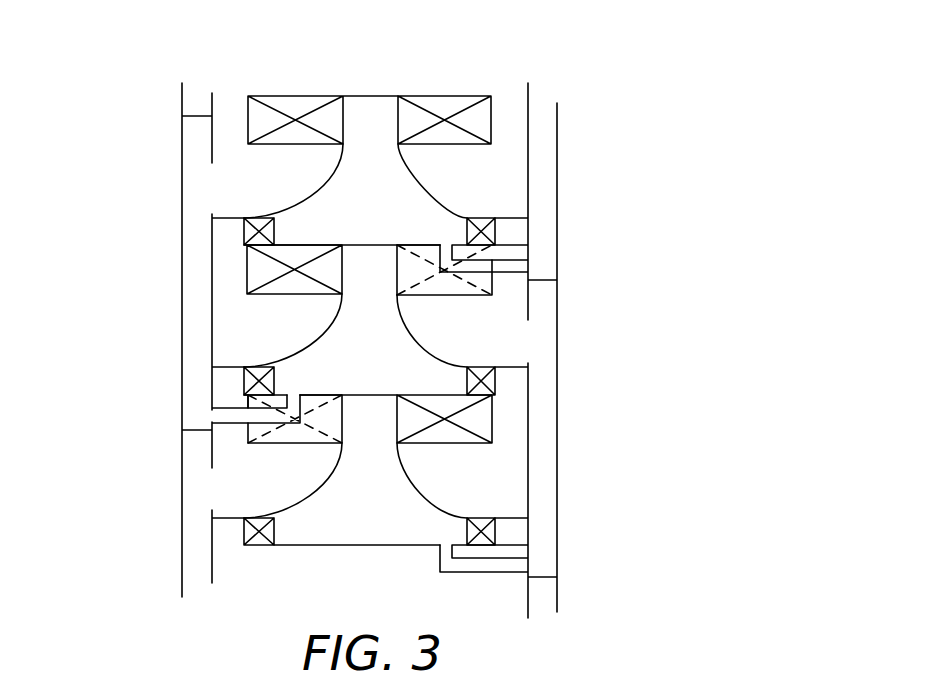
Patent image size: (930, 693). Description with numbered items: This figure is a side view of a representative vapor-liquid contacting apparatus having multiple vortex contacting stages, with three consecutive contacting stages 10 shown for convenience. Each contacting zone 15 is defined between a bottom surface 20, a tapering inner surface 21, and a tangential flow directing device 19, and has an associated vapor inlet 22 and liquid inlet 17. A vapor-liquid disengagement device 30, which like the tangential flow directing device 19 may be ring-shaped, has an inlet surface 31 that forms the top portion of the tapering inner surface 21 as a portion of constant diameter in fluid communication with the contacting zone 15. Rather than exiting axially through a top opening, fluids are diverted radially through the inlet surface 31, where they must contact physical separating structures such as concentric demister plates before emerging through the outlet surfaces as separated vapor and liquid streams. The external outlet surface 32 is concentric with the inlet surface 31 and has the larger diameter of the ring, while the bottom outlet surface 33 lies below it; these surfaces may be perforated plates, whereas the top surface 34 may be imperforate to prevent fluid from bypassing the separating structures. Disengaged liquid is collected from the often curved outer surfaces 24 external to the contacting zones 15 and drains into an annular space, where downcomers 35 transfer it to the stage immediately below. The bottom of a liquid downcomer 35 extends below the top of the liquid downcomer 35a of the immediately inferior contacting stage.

The contacting stage 10 is at (116, 158).
The contacting zone 15 is at (382, 178).
The liquid inlet 17 is at (445, 250).
The tangential flow directing device 19 is at (482, 232).
The bottom surface 20 is at (298, 243).
The tapering inner surface 21 is at (408, 173).
The vapor inlet 22 is at (230, 235).
The outer surface 24 is at (424, 188).
The vapor-liquid disengagement device 30 is at (442, 107).
The inlet surface 31 is at (392, 108).
The external outlet surface 32 is at (492, 130).
The bottom outlet surface 33 is at (492, 145).
The top surface 34 is at (288, 95).
The liquid downcomer 35 is at (193, 252).
The liquid downcomer of immediately inferior contacting stage 35a is at (545, 465).